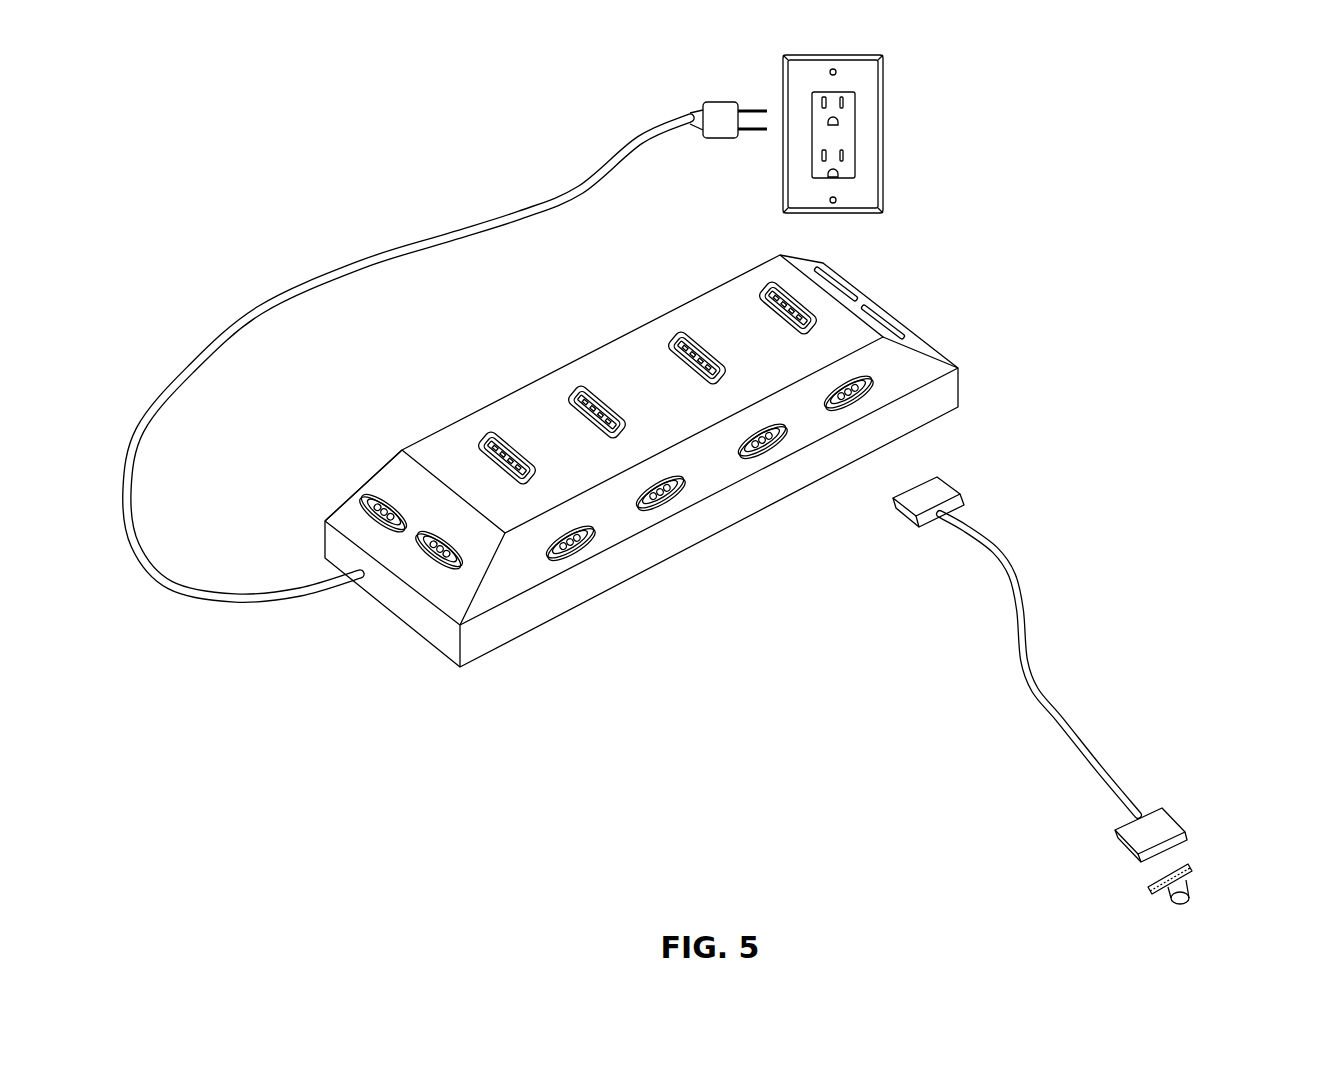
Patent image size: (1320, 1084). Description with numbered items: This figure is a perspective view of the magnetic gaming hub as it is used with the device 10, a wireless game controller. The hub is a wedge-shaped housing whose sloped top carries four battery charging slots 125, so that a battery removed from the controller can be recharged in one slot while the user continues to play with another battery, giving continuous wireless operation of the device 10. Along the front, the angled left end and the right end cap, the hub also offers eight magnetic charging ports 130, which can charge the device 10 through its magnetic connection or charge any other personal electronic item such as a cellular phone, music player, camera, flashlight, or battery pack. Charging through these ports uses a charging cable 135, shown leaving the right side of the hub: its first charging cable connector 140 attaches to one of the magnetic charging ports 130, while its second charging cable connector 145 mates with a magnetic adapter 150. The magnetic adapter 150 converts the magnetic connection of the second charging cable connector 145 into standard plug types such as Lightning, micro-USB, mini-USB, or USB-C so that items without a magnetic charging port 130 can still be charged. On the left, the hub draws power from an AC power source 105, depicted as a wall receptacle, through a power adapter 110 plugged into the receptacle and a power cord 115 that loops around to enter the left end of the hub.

The device 10 is at (542, 352).
The AC power source 105 is at (870, 130).
The power adapter 110 is at (714, 114).
The power cord 115 is at (420, 208).
The battery charging slots 125 is at (515, 490).
The magnetic charging ports 130 is at (387, 525).
The charging cable 135 is at (1028, 618).
The first charging cable connector 140 is at (943, 493).
The second charging cable connector 145 is at (1197, 819).
The magnetic adapter 150 is at (1188, 895).